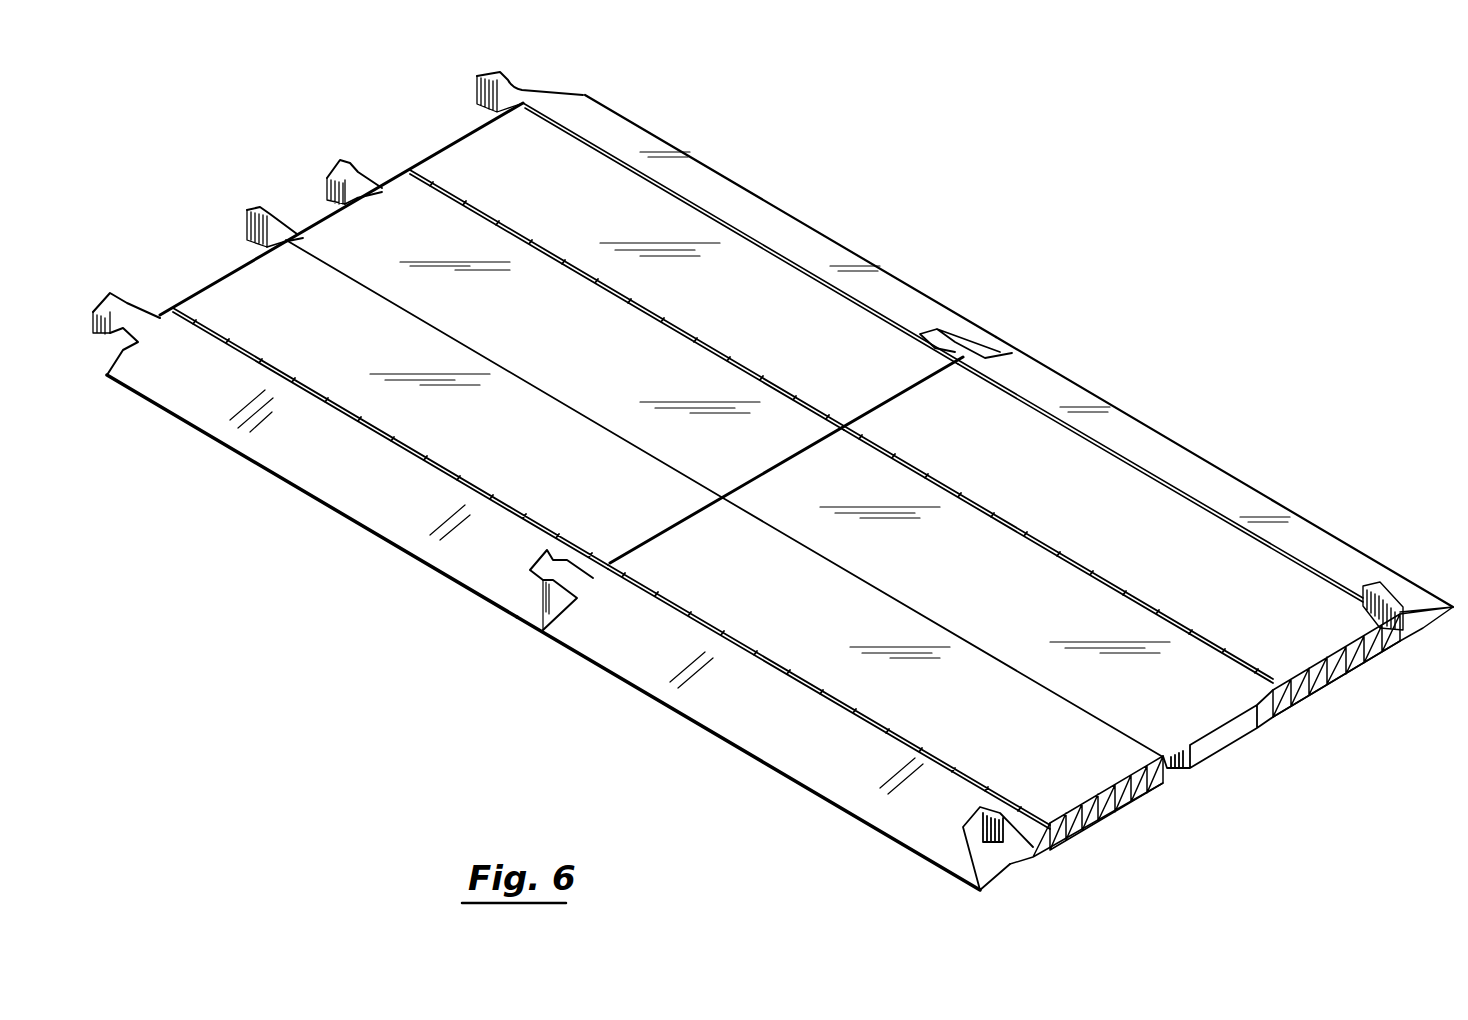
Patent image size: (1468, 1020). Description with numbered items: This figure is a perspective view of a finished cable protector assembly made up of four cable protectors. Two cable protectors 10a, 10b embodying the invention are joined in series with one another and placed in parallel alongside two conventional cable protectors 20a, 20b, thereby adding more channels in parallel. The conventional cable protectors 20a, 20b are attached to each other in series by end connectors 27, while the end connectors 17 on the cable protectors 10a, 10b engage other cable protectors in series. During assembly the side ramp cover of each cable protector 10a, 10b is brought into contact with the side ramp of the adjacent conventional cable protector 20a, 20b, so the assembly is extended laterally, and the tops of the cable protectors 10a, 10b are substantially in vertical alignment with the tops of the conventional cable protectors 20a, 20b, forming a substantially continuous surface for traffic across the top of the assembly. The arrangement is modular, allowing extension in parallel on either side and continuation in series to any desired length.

The cable protector 10a is at (747, 756).
The cable protector 10b is at (325, 505).
The end connector 17 is at (245, 226).
The conventional cable protector 20a is at (1175, 428).
The conventional cable protector 20b is at (741, 168).
The end connector 27 is at (478, 92).